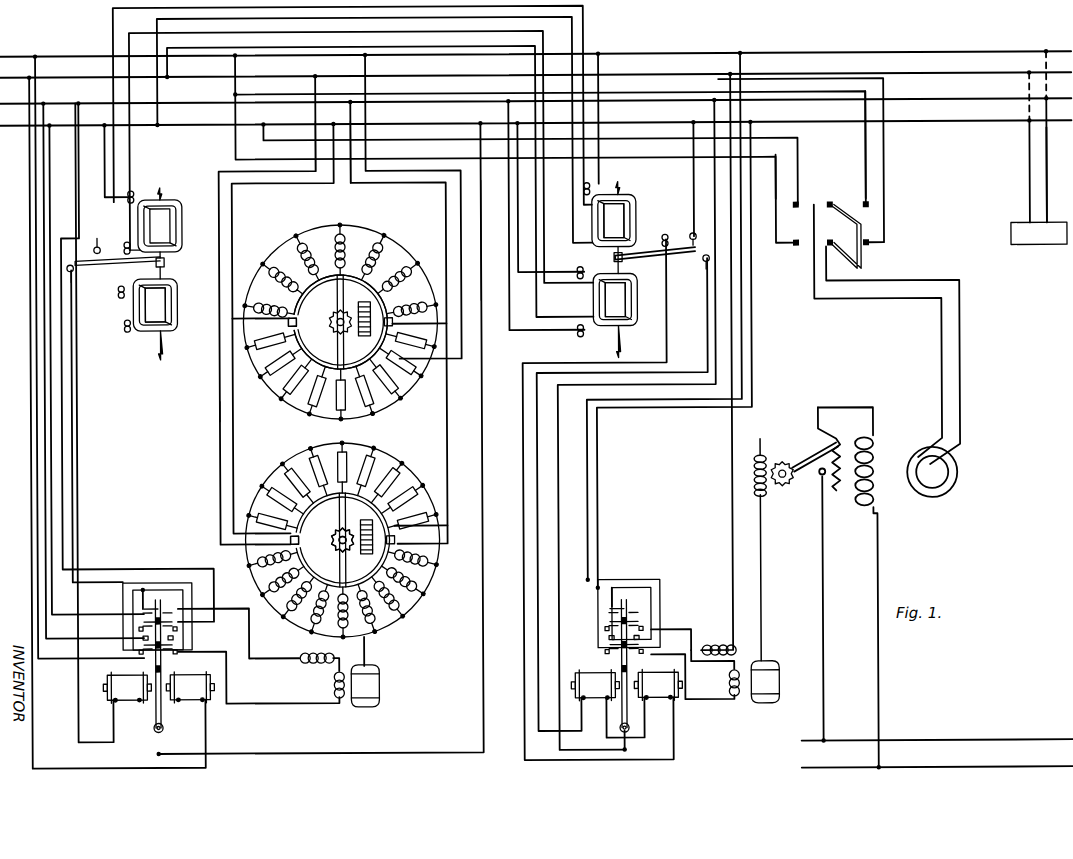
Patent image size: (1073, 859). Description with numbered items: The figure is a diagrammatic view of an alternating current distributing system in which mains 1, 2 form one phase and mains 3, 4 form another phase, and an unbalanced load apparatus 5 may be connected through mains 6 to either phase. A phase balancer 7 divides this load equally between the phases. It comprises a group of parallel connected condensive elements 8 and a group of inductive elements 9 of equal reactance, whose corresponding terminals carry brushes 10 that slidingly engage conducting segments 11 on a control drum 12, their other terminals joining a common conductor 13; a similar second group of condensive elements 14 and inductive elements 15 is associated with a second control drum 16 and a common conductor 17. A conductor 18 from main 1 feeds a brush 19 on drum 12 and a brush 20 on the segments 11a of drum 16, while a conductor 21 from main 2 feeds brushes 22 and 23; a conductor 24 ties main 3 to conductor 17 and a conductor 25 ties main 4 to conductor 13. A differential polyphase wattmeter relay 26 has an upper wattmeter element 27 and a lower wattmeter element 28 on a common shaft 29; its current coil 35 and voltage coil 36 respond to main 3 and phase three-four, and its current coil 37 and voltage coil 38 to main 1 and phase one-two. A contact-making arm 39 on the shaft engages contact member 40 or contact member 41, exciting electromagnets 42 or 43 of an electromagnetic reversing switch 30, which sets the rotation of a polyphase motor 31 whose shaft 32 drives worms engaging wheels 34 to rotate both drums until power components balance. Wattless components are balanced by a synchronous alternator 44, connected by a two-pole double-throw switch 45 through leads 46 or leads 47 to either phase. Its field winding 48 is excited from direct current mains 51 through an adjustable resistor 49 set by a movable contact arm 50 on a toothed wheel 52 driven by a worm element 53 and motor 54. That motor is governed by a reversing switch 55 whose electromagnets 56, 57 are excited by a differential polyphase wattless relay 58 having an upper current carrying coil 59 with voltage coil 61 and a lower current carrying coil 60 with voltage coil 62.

The main 1 is at (54, 124).
The main 2 is at (54, 102).
The main 3 is at (58, 76).
The main 4 is at (58, 55).
The unbalanced load apparatus 5 is at (1016, 230).
The mains 6 is at (1044, 168).
The phase balancer 7 is at (344, 318).
The condensive elements 8 is at (270, 338).
The inductive elements 9 is at (398, 260).
The brushes 10 is at (412, 315).
The conducting segments 11 is at (309, 363).
The conducting segments 11a is at (294, 536).
The control drum 12 is at (341, 322).
The common conductor 13 is at (348, 243).
The condensive elements 14 is at (413, 489).
The inductive elements 15 is at (264, 559).
The control drum 16 is at (349, 536).
The common conductor 17 is at (382, 465).
The conductor 18 is at (332, 176).
The brush 19 is at (282, 330).
The brush 20 is at (279, 547).
The conductor 21 is at (432, 176).
The brush 22 is at (415, 357).
The brush 23 is at (428, 538).
The conductor 24 is at (221, 352).
The conductor 25 is at (466, 212).
The differential polyphase wattmeter relay 26 is at (125, 268).
The upper wattmeter element 27 is at (149, 194).
The lower wattmeter element 28 is at (164, 334).
The common shaft 29 is at (164, 350).
The electromagnetic reversing switch 30 is at (168, 658).
The polyphase alternating current motor 31 is at (378, 682).
The shaft 32 is at (374, 648).
The wheels 34 is at (332, 331).
The current coil 35 is at (150, 211).
The voltage coil 36 is at (176, 247).
The current coil 37 is at (138, 298).
The voltage coil 38 is at (168, 300).
The rotatable contact-making arm 39 is at (98, 266).
The contact member 40 is at (81, 271).
The contact member 41 is at (92, 244).
The electromagnet 42 is at (132, 698).
The electromagnet 43 is at (196, 698).
The synchronous alternator 44 is at (955, 470).
The two-pole, double-throw switch 45 is at (806, 215).
The leads 46 is at (782, 176).
The leads 47 is at (874, 170).
The field winding 48 is at (874, 493).
The adjustable resistor 49 is at (828, 436).
The movable contact arm 50 is at (812, 458).
The direct current mains 51 is at (912, 753).
The toothed wheel 52 is at (786, 484).
The worm element 53 is at (762, 546).
The polyphase alternating current motor 54 is at (754, 690).
The reversing switch 55 is at (655, 647).
The electromagnet 56 is at (600, 698).
The electromagnet 57 is at (664, 698).
The differential polyphase wattless relay 58 is at (628, 269).
The upper current carrying coil 59 is at (600, 222).
The lower current carrying coil 60 is at (600, 296).
The voltage coil 61 is at (636, 230).
The voltage coil 62 is at (648, 304).